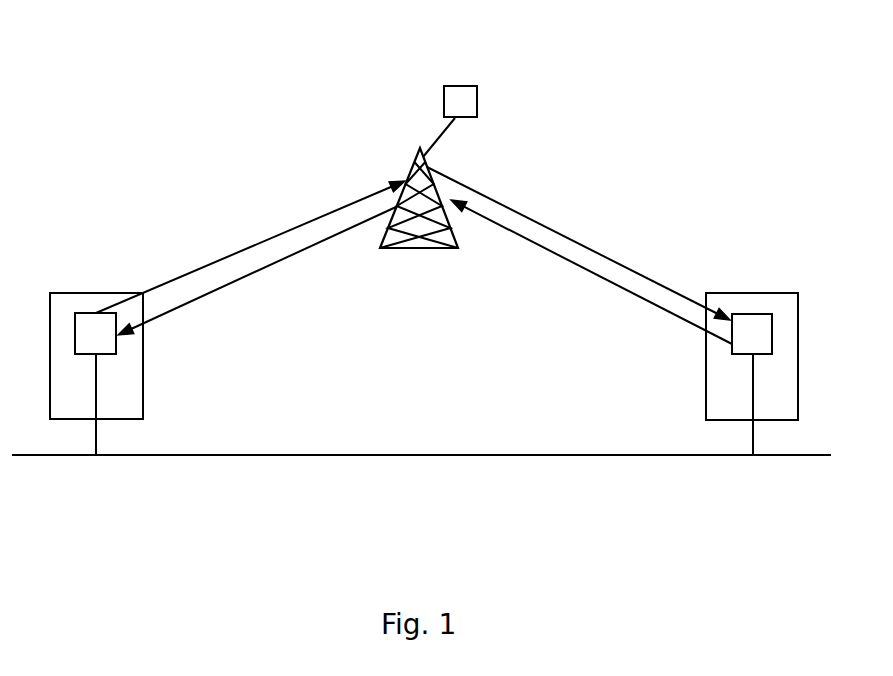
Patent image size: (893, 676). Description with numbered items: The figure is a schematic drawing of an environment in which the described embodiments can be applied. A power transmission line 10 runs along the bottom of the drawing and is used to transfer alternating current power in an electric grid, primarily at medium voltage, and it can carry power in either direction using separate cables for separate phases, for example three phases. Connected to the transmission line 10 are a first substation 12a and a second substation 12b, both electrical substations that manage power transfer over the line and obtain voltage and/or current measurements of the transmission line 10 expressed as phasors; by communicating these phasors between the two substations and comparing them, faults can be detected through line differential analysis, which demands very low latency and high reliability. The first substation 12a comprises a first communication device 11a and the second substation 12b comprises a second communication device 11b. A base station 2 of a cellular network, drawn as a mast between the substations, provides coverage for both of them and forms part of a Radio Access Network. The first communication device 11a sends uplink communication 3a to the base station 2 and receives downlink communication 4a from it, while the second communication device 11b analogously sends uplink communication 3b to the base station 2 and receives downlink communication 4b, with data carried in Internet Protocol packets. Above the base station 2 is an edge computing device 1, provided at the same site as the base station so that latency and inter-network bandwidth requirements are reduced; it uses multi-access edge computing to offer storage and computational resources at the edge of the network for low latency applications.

The edge computing device 1 is at (460, 85).
The base station 2 is at (457, 250).
The uplink communication 3a is at (240, 250).
The downlink communication 4a is at (237, 282).
The uplink communication 3b is at (573, 265).
The downlink communication 4b is at (527, 215).
The power transmission line 10 is at (495, 455).
The first communication device 11a is at (117, 347).
The first substation 12a is at (68, 292).
The second communication device 11b is at (773, 342).
The second substation 12b is at (763, 293).